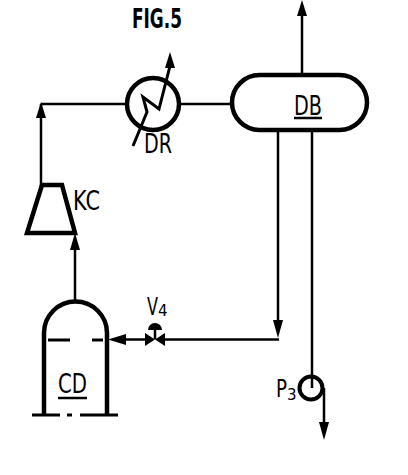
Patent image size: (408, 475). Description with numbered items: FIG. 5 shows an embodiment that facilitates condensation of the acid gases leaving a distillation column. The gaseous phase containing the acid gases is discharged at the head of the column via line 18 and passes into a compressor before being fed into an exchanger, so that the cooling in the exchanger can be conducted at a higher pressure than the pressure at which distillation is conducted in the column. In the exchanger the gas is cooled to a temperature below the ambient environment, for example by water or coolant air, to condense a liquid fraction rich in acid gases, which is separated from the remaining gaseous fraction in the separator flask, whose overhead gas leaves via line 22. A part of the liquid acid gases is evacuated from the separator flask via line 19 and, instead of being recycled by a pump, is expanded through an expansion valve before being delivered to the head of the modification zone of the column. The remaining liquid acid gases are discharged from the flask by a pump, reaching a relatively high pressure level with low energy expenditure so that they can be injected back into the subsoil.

The line 18 is at (77, 272).
The line 19 is at (278, 252).
The overhead vapor line from drum DB 22 is at (301, 35).